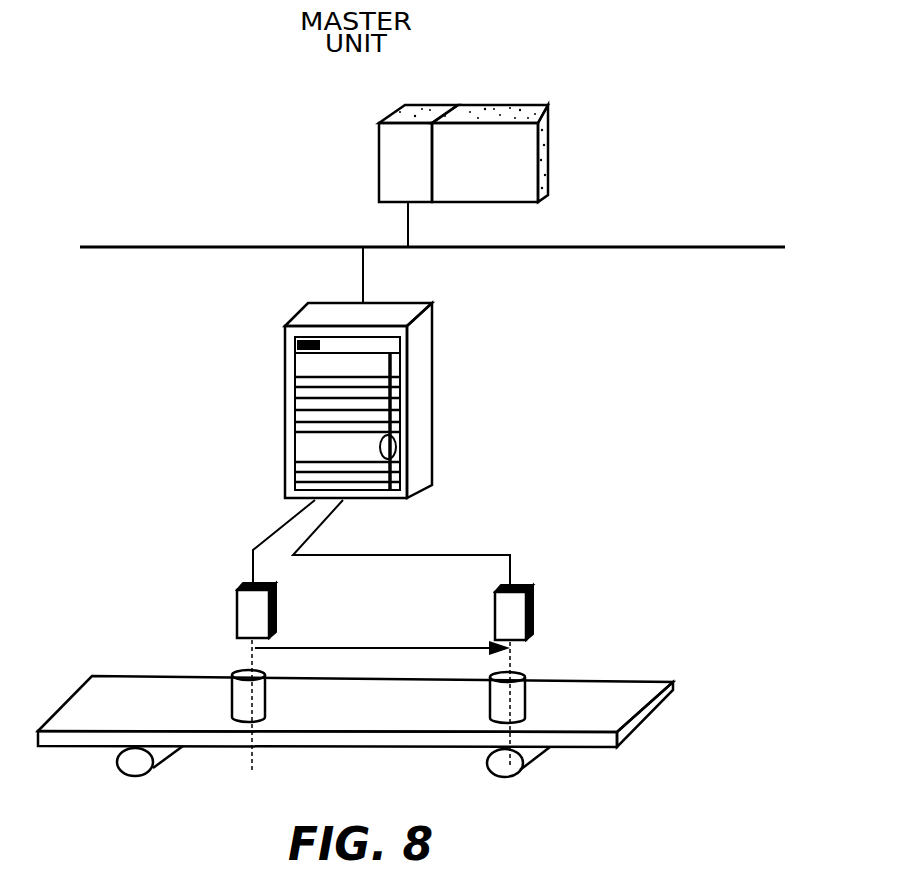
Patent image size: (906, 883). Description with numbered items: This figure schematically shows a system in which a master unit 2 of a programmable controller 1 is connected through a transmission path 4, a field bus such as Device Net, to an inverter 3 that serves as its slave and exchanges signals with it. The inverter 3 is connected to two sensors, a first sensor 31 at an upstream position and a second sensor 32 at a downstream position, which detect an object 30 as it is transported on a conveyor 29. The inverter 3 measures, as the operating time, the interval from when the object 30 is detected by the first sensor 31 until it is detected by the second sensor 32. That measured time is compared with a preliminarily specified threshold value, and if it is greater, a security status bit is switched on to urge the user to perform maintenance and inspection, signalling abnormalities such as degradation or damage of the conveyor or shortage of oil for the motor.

The programmable controller 1 is at (510, 113).
The master unit 2 is at (423, 115).
The inverter 3 is at (422, 392).
The transmission path 4 is at (673, 247).
The conveyor 29 is at (632, 688).
The object 30 is at (265, 698).
The first sensor 31 is at (237, 613).
The second sensor 32 is at (533, 607).